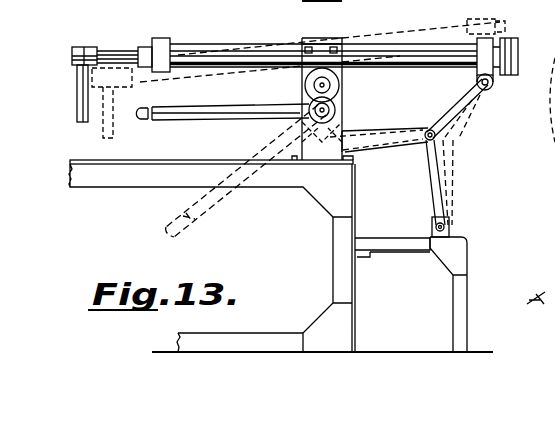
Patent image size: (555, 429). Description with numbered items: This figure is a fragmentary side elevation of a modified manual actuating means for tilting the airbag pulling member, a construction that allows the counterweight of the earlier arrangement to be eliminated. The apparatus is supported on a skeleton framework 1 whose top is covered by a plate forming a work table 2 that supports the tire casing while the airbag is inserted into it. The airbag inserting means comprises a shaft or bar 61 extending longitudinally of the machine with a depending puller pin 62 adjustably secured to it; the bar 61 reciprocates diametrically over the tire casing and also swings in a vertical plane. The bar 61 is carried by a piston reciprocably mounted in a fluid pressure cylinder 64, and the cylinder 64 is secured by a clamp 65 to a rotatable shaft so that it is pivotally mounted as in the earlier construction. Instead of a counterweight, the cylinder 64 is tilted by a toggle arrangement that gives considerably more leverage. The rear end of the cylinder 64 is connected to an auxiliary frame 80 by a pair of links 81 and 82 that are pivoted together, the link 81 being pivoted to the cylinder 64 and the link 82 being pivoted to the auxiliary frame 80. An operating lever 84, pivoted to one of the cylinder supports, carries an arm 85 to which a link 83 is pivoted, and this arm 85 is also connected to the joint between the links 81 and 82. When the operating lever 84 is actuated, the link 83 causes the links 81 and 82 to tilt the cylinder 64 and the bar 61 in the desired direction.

The skeleton framework 1 is at (150, 180).
The work table 2 is at (109, 163).
The shaft or bar 61 is at (125, 36).
The puller pin 62 is at (80, 93).
The fluid pressure cylinder 64 is at (226, 42).
The clamp 65 is at (332, 38).
The auxiliary frame 80 is at (467, 262).
The link 81 is at (467, 112).
The link 82 is at (457, 186).
The link 83 is at (384, 140).
The operating lever 84 is at (220, 112).
The arm 85 is at (300, 126).